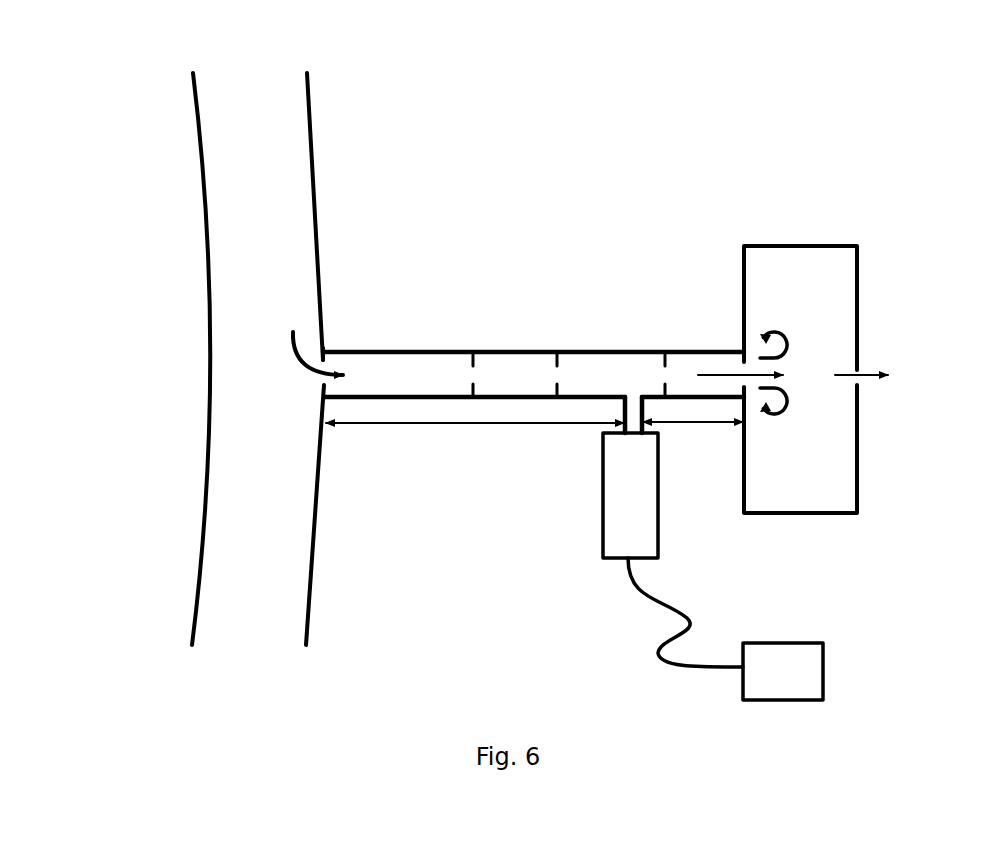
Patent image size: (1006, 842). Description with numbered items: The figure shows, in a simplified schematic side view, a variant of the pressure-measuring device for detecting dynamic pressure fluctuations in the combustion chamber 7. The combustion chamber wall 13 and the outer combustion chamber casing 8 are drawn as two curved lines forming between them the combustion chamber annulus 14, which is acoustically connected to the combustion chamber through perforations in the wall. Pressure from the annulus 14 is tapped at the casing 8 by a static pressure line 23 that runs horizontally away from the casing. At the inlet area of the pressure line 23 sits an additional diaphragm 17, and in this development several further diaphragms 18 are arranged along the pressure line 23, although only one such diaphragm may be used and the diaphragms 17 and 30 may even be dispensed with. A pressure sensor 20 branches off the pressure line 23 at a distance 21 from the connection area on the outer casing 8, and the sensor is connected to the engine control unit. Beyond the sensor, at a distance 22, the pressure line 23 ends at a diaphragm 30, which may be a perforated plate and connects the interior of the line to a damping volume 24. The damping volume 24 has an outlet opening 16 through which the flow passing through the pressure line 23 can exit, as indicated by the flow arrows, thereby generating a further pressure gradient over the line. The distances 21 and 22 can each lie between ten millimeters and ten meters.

The combustion chamber 7 is at (109, 362).
The outer combustion chamber casing 8 is at (322, 155).
The combustion chamber wall 13 is at (193, 130).
The combustion chamber annulus 14 is at (295, 358).
The outlet opening 16 is at (857, 378).
The additional diaphragm 17 is at (327, 372).
The further diaphragms 18 is at (475, 376).
The pressure sensor 20 is at (713, 548).
The distance 21 is at (475, 442).
The distance 22 is at (693, 441).
The static pressure line 23 is at (437, 370).
The damping volume 24 is at (825, 325).
The diaphragm 30 is at (743, 372).